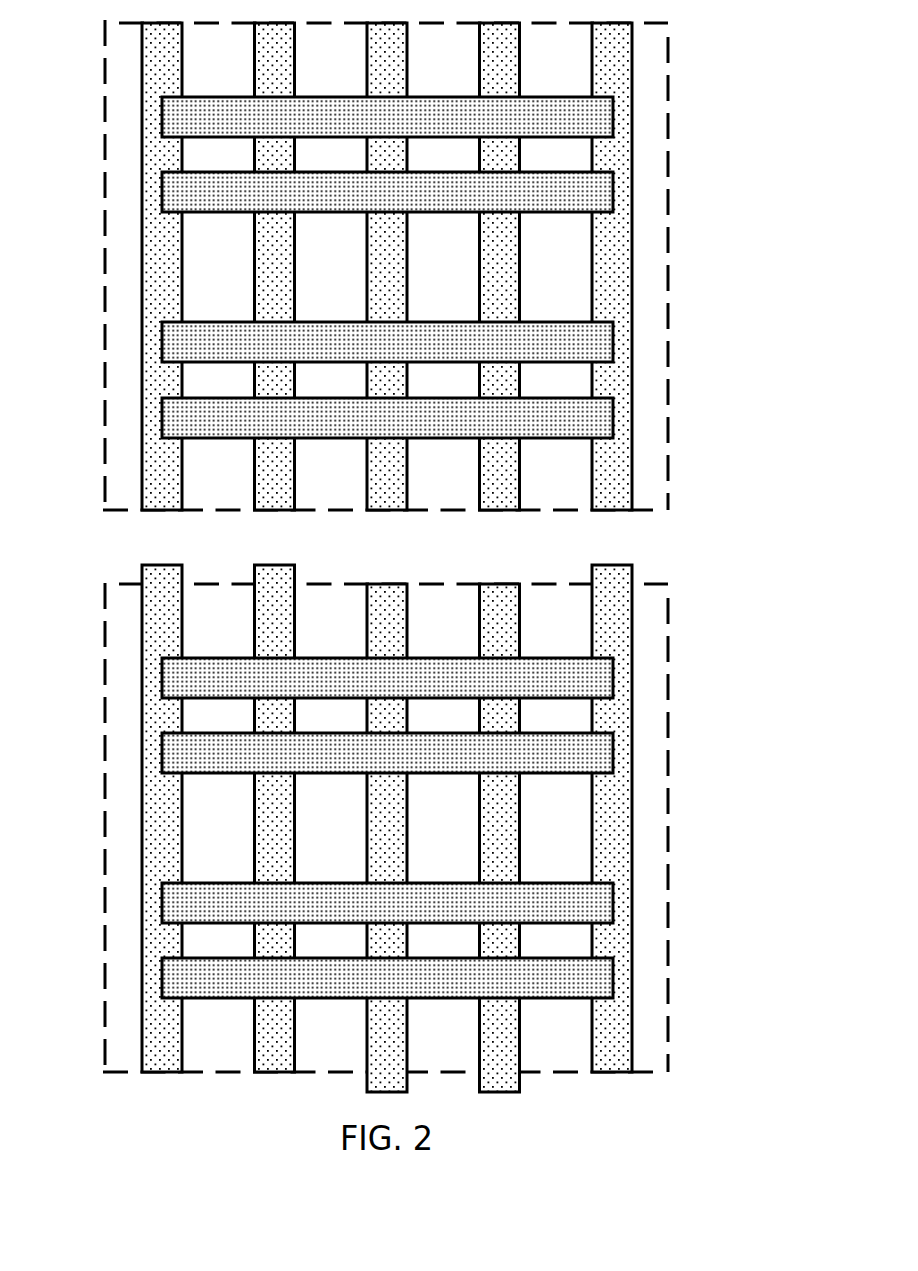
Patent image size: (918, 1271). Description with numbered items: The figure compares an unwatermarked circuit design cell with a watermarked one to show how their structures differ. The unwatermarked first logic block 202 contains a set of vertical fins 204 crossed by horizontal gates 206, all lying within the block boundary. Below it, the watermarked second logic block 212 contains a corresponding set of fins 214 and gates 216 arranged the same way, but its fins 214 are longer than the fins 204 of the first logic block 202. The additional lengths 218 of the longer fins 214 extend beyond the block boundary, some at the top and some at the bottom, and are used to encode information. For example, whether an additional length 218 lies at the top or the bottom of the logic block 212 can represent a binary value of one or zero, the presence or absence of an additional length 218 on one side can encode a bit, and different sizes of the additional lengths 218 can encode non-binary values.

The first logic block 202 is at (668, 62).
The fins 204 is at (632, 264).
The gates 206 is at (613, 416).
The second logic block 212 is at (668, 620).
The fins 214 is at (632, 827).
The gates 216 is at (613, 976).
The additional lengths 218 is at (632, 566).